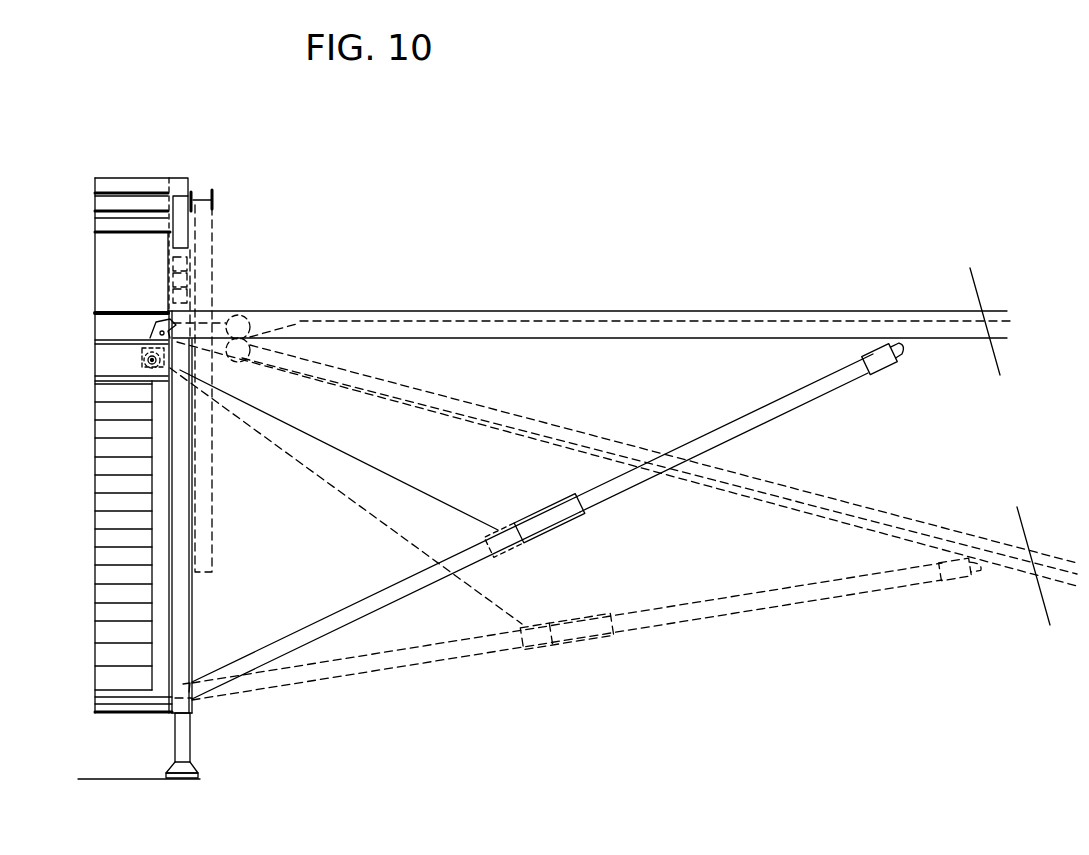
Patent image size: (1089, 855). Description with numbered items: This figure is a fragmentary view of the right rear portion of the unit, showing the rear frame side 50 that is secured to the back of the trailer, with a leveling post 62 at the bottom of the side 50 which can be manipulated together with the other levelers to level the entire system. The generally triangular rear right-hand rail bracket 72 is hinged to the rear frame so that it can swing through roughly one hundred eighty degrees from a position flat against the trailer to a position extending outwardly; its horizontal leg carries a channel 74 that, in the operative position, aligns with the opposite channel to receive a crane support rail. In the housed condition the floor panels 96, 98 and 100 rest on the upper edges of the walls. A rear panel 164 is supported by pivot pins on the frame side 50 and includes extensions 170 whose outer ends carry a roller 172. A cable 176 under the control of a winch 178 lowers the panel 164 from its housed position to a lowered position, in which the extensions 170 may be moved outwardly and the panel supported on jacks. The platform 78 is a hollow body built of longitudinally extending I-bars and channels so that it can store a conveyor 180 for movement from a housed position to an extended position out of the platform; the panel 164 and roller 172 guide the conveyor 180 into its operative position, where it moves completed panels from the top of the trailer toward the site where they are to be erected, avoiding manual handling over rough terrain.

The side 50 is at (183, 608).
The leveling post 62 is at (185, 741).
The rear right-hand rail bracket 72 is at (212, 250).
The channel 74 is at (213, 197).
The platform 78 is at (110, 330).
The floor panel 96 is at (105, 237).
The floor panel 98 is at (140, 203).
The floor panel 100 is at (112, 182).
The rear panel 164 is at (393, 594).
The extension 170 is at (600, 493).
The roller 172 is at (907, 348).
The cable 176 is at (442, 460).
The winch 178 is at (130, 367).
The conveyor 180 is at (572, 340).